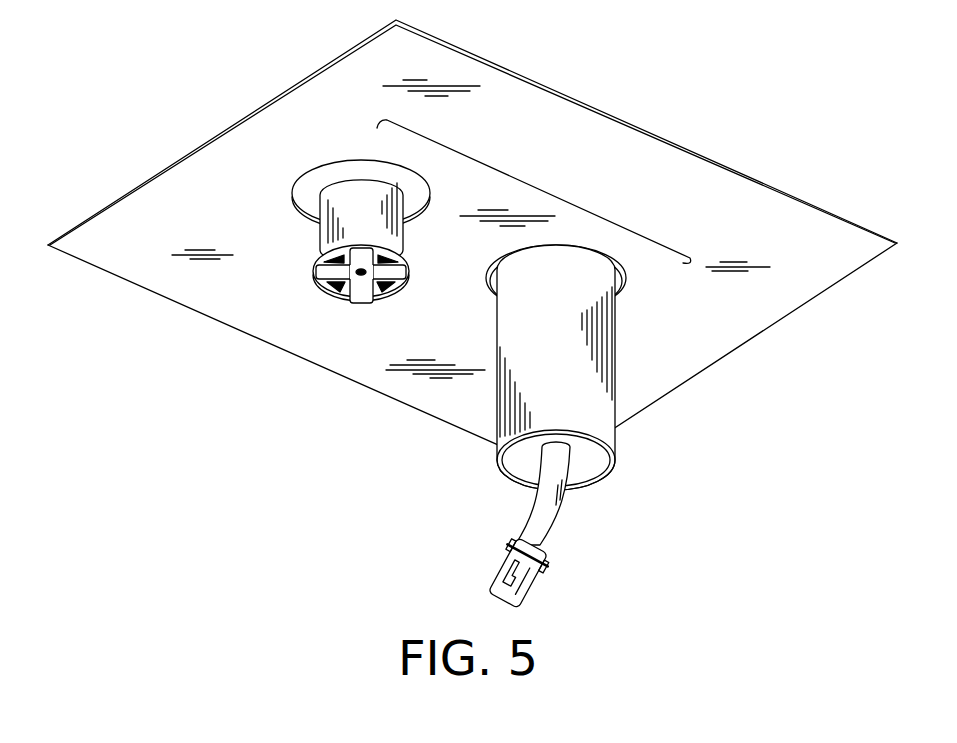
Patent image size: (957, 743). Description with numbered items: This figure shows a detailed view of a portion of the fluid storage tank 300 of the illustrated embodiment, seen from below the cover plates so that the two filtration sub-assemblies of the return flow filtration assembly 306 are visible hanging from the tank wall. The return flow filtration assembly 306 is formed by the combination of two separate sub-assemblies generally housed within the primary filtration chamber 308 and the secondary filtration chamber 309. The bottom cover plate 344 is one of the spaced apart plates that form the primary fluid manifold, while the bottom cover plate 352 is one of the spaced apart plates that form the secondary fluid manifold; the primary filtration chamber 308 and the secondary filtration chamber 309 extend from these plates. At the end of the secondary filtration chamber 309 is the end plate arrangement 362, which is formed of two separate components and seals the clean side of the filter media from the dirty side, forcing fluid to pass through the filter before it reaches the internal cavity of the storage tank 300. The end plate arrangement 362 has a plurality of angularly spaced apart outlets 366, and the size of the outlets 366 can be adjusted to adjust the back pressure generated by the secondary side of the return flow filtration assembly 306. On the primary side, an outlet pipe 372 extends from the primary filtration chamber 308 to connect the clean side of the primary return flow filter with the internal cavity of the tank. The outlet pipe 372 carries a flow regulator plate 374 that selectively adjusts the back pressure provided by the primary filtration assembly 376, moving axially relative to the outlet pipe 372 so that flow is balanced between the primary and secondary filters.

The fluid storage tank 300 is at (788, 148).
The return flow filtration assembly 306 is at (533, 186).
The primary filtration chamber 308 is at (607, 410).
The secondary filtration chamber 309 is at (333, 190).
The bottom cover plate 344 is at (636, 296).
The bottom cover plate 352 is at (297, 207).
The end plate arrangement 362 is at (296, 245).
The outlets 366 is at (377, 285).
The outlet pipe 372 is at (530, 530).
The flow regulator plate 374 is at (527, 553).
The primary filtration assembly 376 is at (636, 479).